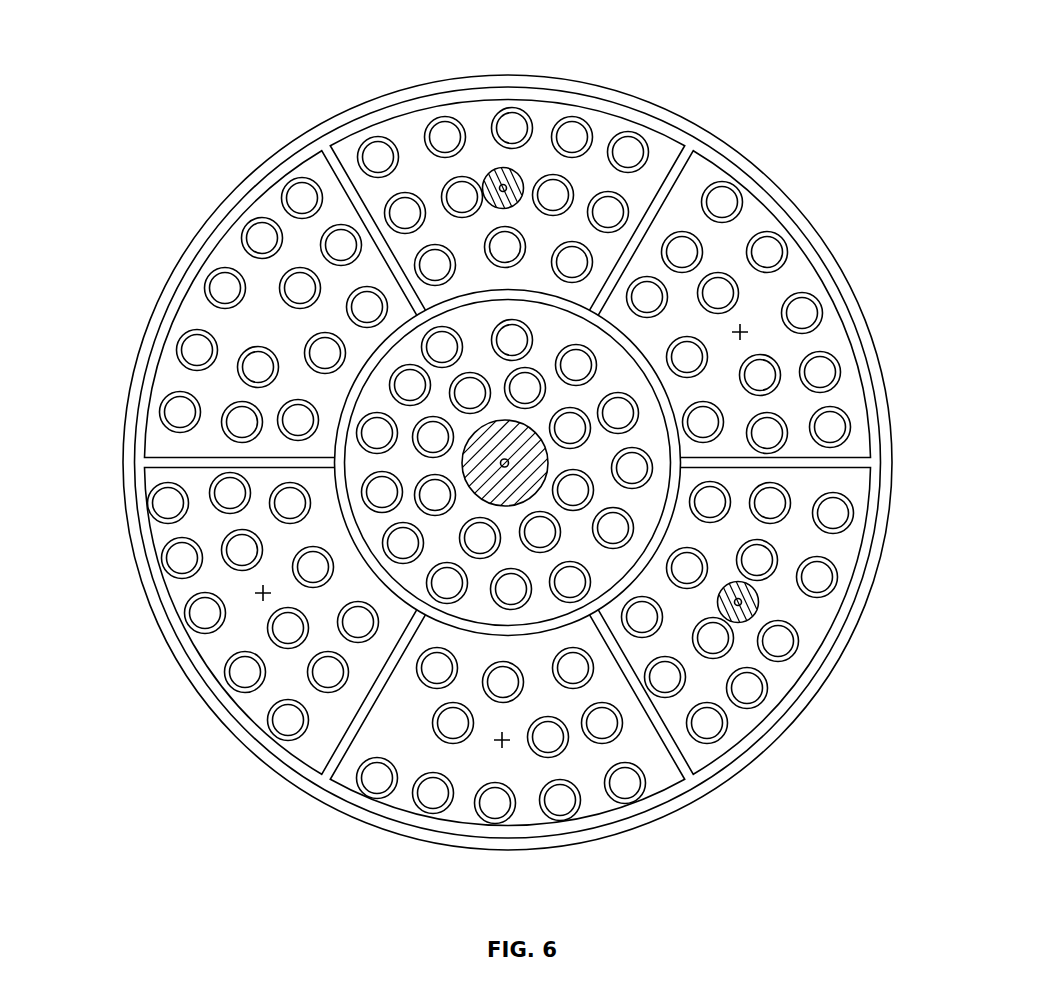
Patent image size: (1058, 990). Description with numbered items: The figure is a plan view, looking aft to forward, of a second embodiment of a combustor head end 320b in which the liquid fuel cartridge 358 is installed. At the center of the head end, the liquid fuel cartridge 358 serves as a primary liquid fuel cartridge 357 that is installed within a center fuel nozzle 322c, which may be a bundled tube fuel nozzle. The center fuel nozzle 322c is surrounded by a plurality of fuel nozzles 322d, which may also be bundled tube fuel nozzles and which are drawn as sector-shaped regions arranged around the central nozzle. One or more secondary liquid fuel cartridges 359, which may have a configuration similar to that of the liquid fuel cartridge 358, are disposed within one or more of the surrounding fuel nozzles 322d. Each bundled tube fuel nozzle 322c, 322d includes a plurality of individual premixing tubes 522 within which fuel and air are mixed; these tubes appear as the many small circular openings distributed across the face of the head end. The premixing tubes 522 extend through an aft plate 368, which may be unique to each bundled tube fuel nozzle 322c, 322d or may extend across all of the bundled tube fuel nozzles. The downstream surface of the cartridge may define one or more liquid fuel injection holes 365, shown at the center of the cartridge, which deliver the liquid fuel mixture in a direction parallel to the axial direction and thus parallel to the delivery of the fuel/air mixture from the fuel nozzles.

The combustor head end 320b is at (122, 160).
The secondary liquid fuel cartridge 359 is at (491, 177).
The fuel nozzle 322d is at (667, 143).
The aft plate 368 is at (778, 278).
The liquid fuel injection hole 365 is at (502, 461).
The liquid fuel cartridge 358 is at (461, 467).
The premixing tube 522 is at (413, 800).
The primary liquid fuel cartridge 357 is at (510, 512).
The center fuel nozzle 322c is at (573, 603).